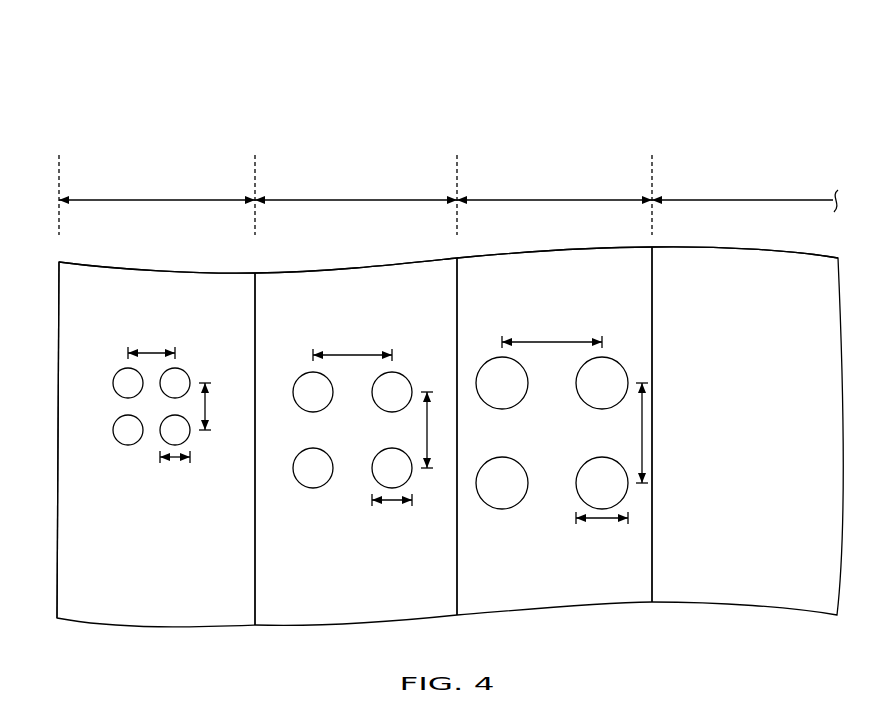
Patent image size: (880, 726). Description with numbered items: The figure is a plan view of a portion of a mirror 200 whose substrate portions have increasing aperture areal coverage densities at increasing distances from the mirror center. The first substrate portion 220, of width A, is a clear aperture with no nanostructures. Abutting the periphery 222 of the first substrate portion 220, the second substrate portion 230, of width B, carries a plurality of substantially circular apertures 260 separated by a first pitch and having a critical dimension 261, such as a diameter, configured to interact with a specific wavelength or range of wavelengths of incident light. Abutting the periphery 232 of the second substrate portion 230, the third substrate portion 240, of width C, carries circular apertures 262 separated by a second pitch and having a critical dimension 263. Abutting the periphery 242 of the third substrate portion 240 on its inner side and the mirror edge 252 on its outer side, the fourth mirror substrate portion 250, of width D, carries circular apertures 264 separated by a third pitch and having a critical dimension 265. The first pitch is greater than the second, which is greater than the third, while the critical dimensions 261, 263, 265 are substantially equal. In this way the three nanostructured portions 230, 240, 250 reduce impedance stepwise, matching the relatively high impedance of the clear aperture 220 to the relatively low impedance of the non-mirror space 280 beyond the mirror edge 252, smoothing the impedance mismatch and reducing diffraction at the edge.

The mirror 200 is at (163, 84).
The first substrate portion 220 is at (738, 258).
The periphery of the first substrate portion 222 is at (654, 591).
The second substrate portion 230 is at (558, 270).
The periphery of the second substrate portion 232 is at (458, 593).
The third substrate portion 240 is at (357, 278).
The periphery of the third substrate portion 242 is at (256, 591).
The fourth mirror substrate portion 250 is at (170, 280).
The mirror edge 252 is at (59, 591).
The apertures 260 is at (602, 383).
The critical dimension 261 is at (600, 522).
The apertures 262 is at (392, 392).
The critical dimension 263 is at (386, 506).
The apertures 264 is at (175, 383).
The critical dimension 265 is at (172, 462).
The non-mirror space 280 is at (46, 304).